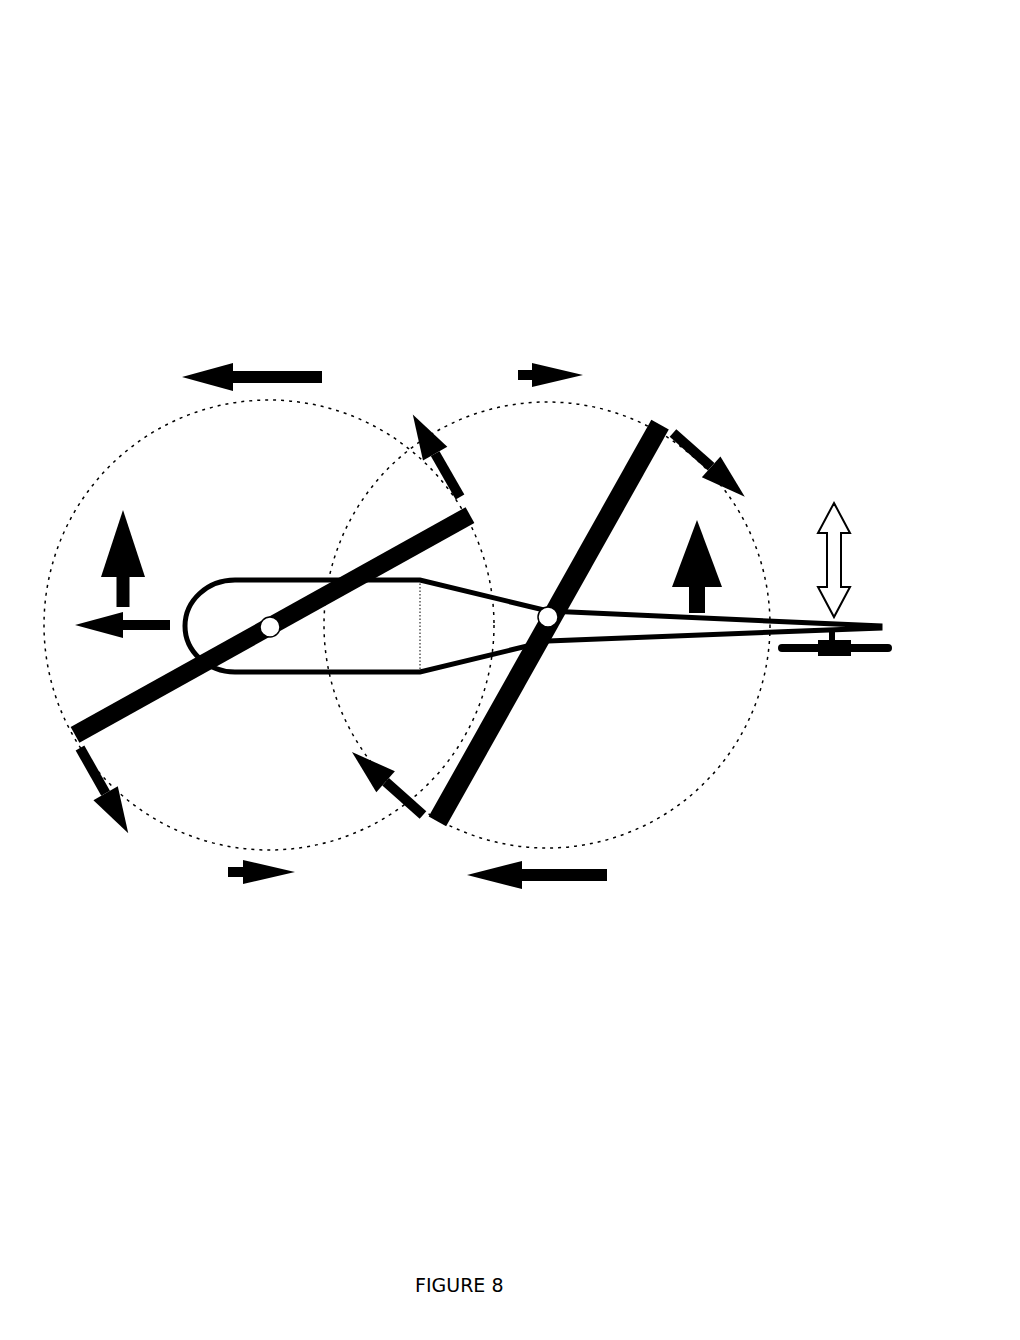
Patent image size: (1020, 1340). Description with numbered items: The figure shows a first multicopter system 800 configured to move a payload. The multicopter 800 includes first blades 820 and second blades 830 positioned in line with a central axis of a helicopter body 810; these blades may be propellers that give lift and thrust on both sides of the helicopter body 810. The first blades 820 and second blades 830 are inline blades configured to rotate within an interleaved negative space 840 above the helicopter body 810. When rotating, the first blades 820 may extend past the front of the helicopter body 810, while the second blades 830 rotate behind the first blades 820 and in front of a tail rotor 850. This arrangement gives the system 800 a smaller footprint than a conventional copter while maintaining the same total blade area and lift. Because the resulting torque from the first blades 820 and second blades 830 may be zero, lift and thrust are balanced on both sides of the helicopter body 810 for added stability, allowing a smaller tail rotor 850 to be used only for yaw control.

The first multicopter system 800 is at (125, 113).
The helicopter body 810 is at (288, 662).
The first blades 820 is at (307, 600).
The second blades 830 is at (593, 552).
The interleaved negative space 840 is at (388, 478).
The tail rotor 850 is at (832, 655).